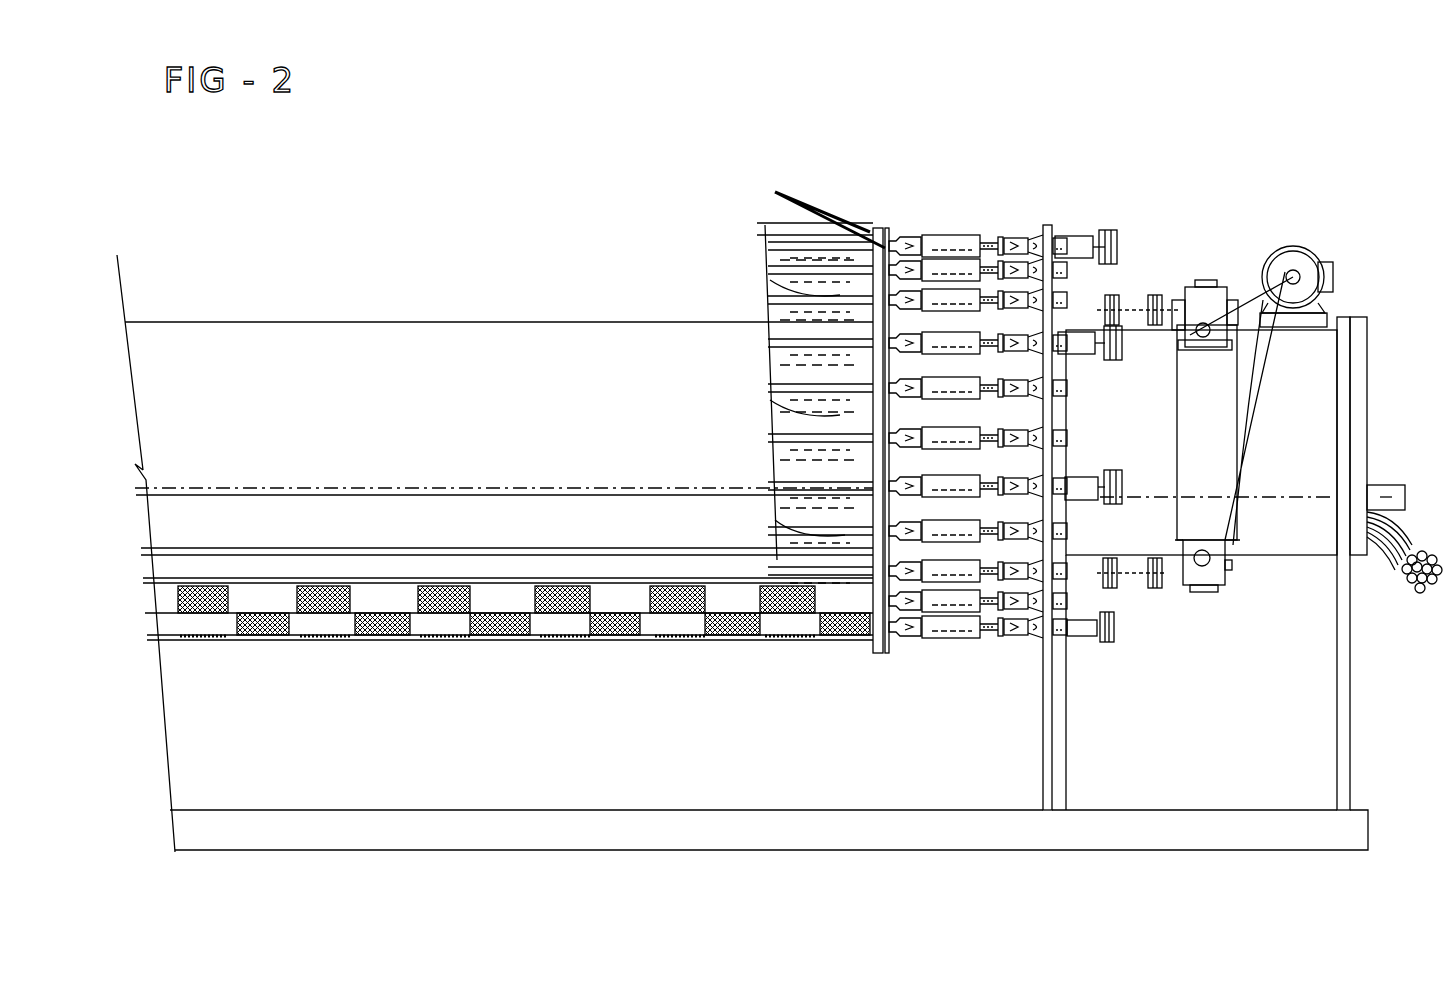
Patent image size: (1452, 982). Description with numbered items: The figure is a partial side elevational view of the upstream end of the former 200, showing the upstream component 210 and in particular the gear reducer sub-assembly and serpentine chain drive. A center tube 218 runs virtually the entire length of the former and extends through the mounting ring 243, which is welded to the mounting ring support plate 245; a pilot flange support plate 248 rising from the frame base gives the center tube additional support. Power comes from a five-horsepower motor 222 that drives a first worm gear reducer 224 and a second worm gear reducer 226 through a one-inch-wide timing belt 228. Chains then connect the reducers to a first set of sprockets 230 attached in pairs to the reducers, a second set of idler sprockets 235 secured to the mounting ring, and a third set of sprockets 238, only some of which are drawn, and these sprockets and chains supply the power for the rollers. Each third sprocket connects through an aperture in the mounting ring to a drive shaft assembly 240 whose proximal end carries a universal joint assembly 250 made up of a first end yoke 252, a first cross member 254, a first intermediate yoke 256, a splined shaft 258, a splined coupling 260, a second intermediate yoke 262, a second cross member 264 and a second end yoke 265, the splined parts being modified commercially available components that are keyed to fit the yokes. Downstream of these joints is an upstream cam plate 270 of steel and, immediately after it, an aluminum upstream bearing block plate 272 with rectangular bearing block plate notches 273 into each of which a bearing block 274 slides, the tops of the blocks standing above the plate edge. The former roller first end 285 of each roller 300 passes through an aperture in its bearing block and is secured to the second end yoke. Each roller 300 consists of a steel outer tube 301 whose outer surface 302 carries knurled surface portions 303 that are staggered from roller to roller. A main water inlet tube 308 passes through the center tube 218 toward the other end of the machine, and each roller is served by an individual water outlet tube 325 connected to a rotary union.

The former 200 is at (338, 272).
The upstream component 210 is at (1195, 150).
The center tube 218 is at (455, 332).
The motor 222 is at (1240, 340).
The first worm gear reducer 224 is at (1203, 287).
The second worm gear reducer 226 is at (1168, 600).
The timing belt 228 is at (1340, 345).
The first set of sprockets 230 is at (1128, 292).
The second set of sprockets 235 is at (1175, 395).
The third set of sprockets 238 is at (1120, 250).
The drive shaft assembly 240 is at (1118, 242).
The mounting ring 243 is at (1048, 682).
The mounting ring support plate 245 is at (1082, 713).
The pilot flange support plate 248 is at (1350, 750).
The universal joint assembly 250 is at (1025, 130).
The first end yoke 252 is at (1060, 383).
The first cross member 254 is at (1040, 238).
The first intermediate yoke 256 is at (1020, 242).
The splined shaft 258 is at (1003, 238).
The splined coupling 260 is at (960, 245).
The second intermediate yoke 262 is at (940, 240).
The second cross member 264 is at (912, 245).
The second end yoke 265 is at (891, 240).
The upstream cam plate 270 is at (880, 235).
The upstream bearing block plate 272 is at (873, 530).
The bearing block plate notches 273 is at (873, 487).
The bearing blocks 274 is at (873, 440).
The former roller first end 285 is at (740, 600).
The roller 300 is at (873, 395).
The outer tube 301 is at (605, 642).
The outer surface 302 is at (370, 642).
The knurled surface portions 303 is at (207, 642).
The main water inlet tube 308 is at (1383, 482).
The individual water outlet tube 325 is at (1420, 600).